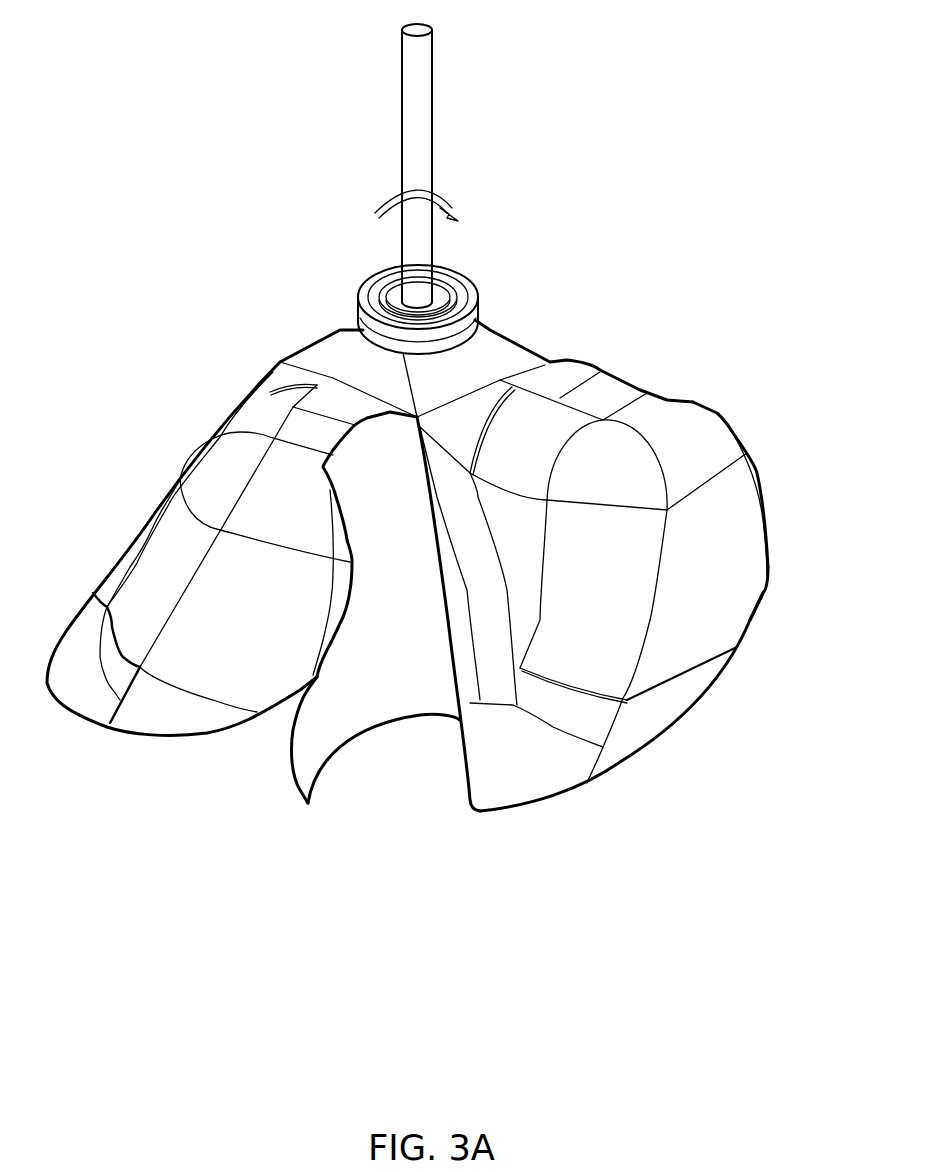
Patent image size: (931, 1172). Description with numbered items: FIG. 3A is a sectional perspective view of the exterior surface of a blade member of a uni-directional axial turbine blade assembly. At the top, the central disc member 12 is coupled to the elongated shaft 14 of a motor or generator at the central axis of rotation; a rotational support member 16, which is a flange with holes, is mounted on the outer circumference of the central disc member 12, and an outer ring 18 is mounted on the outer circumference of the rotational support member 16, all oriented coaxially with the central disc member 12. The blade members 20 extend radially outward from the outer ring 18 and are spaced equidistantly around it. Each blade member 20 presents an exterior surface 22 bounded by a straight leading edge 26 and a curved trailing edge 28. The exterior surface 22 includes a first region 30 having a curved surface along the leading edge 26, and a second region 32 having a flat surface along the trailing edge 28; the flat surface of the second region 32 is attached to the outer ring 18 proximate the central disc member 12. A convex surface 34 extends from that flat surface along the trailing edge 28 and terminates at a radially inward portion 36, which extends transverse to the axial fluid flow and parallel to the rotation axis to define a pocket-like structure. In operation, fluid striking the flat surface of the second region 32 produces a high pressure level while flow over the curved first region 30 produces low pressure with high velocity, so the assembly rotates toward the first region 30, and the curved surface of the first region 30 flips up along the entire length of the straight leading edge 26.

The central disc member 12 is at (438, 288).
The elongated shaft 14 is at (428, 68).
The rotational support member 16 is at (460, 300).
The outer ring 18 is at (463, 325).
The blade member 20 is at (354, 594).
The exterior surface 22 is at (605, 646).
The leading edge 26 is at (452, 665).
The trailing edge 28 is at (758, 610).
The first region 30 is at (480, 602).
The second region 32 is at (608, 388).
The convex surface 34 is at (718, 450).
The radially inward portion 36 is at (483, 800).